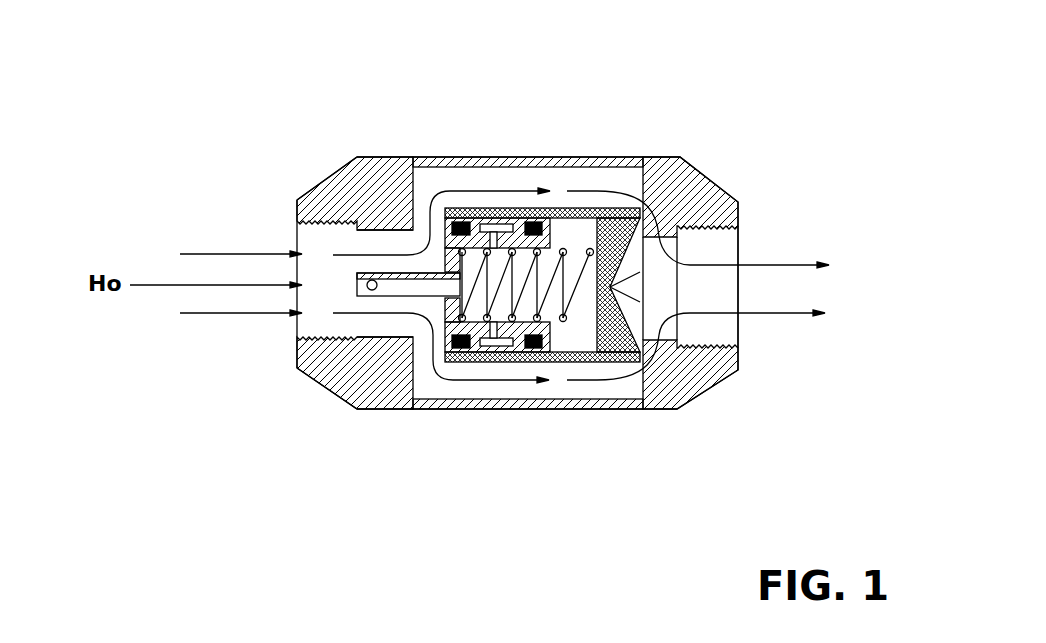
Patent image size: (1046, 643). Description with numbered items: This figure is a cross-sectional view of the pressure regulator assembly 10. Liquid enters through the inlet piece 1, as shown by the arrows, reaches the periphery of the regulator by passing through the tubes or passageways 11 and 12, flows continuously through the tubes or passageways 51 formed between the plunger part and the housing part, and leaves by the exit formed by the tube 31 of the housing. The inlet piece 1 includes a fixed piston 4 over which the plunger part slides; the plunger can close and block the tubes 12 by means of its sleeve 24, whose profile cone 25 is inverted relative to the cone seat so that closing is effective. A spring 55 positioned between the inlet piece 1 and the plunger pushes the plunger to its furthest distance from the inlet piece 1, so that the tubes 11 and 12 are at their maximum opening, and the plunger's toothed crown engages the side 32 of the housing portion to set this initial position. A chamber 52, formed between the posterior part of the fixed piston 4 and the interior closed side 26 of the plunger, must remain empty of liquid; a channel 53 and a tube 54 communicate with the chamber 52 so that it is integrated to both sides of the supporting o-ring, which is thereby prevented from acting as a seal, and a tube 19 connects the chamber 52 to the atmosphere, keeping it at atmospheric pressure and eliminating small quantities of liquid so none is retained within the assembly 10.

The inlet piece 1 is at (295, 191).
The fixed piston 4 is at (585, 208).
The pressure regulator assembly 10 is at (345, 506).
The tubes or passageways 11 is at (375, 245).
The tubes or passageways 12 is at (432, 262).
The tube 19 is at (370, 278).
The sleeve 24 is at (440, 375).
The profile cone 25 is at (352, 409).
The interior closed side 26 is at (545, 368).
The tube 31 is at (740, 202).
The side 32 is at (563, 393).
The tubes or passageways 51 is at (583, 183).
The chamber 52 is at (578, 235).
The channel 53 is at (515, 212).
The tube 54 is at (478, 218).
The spring 55 is at (573, 305).